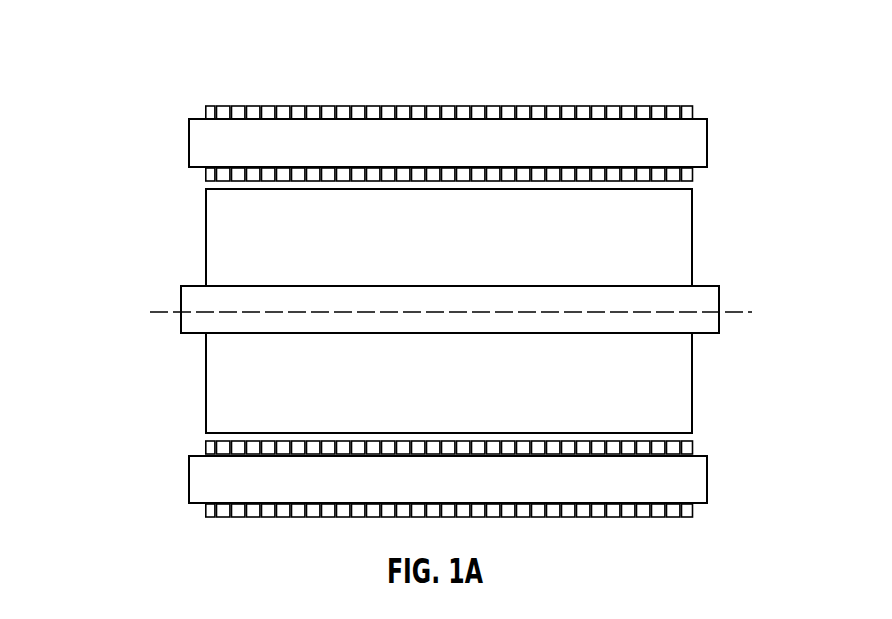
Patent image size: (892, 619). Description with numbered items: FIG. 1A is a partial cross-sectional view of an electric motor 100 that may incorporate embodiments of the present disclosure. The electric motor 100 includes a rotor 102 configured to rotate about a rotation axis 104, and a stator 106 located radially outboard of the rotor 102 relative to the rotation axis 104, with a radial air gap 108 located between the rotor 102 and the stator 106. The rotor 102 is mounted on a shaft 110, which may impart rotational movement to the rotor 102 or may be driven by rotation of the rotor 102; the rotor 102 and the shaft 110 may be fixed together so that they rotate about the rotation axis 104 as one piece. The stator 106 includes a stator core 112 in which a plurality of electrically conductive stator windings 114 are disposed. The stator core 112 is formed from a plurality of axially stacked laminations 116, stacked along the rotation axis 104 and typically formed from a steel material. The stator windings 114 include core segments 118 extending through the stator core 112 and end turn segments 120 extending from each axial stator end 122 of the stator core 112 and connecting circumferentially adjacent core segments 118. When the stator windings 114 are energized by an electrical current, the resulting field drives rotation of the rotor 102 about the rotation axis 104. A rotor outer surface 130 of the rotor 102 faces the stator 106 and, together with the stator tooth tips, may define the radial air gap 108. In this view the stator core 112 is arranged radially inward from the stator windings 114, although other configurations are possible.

The electric motor 100 is at (133, 33).
The rotor 102 is at (472, 253).
The rotation axis 104 is at (737, 313).
The stator 106 is at (678, 52).
The radial air gap 108 is at (199, 192).
The shaft 110 is at (188, 329).
The stator core 112 is at (478, 107).
The stator windings 114 is at (567, 142).
The laminations 116 is at (388, 112).
The core segments 118 is at (413, 128).
The end turn segments 120 is at (200, 152).
The axial stator end 122 is at (205, 113).
The rotor outer surface 130 is at (595, 190).